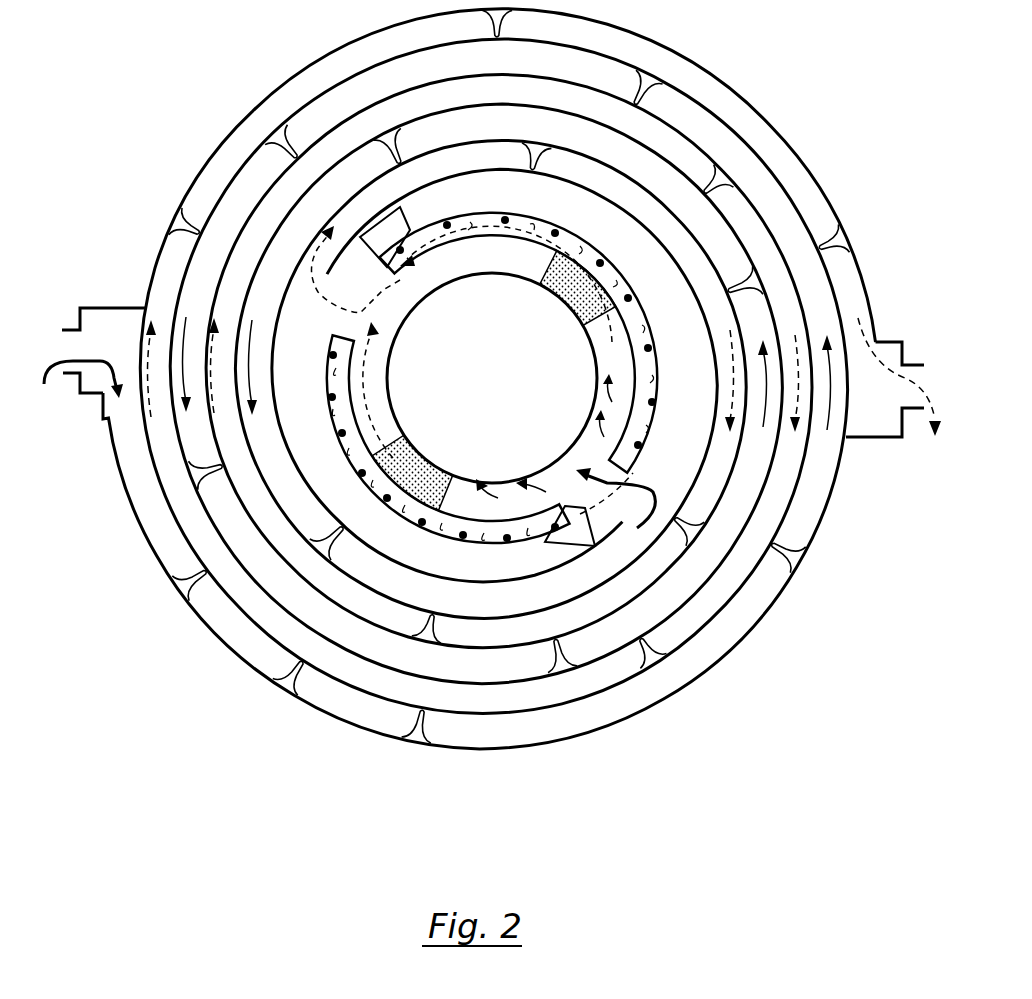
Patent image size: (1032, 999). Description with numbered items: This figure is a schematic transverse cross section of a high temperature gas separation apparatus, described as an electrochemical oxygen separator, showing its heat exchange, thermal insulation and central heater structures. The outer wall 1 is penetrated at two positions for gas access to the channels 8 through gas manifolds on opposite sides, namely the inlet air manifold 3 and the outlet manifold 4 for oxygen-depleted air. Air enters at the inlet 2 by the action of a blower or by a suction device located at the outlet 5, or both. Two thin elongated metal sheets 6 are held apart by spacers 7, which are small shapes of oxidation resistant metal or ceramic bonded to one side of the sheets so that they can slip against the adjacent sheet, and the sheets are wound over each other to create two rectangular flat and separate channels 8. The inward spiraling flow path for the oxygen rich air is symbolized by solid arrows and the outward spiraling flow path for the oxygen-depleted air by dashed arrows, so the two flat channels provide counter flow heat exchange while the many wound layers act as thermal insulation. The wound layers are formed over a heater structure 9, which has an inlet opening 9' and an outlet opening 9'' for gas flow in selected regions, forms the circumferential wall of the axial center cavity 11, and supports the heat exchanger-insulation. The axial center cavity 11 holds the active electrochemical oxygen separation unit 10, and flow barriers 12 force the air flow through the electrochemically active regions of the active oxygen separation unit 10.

The outer wall 1 is at (788, 132).
The inlet 2 is at (67, 378).
The inlet air manifold 3 is at (117, 322).
The outlet manifold 4 is at (871, 424).
The outlet 5 is at (922, 380).
The metal sheets 6 is at (540, 712).
The spacers 7 is at (188, 586).
The channels 8 is at (722, 638).
The heater structure 9 is at (509, 376).
The inlet opening 9' is at (628, 489).
The outlet opening 9'' is at (341, 282).
The active electrochemical oxygen separation unit 10 is at (470, 434).
The axial center cavity 11 is at (496, 272).
The flow barriers 12 is at (602, 316).